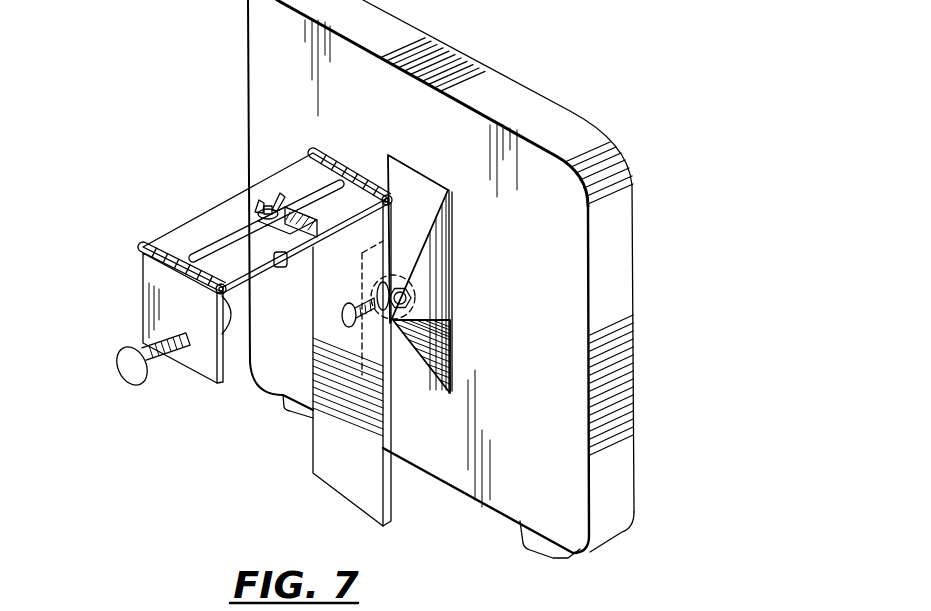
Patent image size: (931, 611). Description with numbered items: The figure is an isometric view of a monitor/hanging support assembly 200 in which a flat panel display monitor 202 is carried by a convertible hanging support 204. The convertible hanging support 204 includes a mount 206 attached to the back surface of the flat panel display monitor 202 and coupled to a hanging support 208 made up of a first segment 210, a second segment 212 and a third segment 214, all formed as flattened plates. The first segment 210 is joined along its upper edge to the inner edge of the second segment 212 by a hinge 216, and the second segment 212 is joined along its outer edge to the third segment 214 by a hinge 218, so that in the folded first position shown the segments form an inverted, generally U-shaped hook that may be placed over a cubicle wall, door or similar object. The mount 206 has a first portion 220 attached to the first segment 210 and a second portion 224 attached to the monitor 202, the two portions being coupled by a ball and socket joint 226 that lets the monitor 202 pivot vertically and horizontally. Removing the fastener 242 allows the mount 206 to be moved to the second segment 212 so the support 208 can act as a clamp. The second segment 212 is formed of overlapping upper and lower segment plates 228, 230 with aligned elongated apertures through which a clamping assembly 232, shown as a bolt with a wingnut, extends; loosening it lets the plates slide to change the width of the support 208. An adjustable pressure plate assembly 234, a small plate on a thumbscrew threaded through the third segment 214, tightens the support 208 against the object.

The monitor/hanging support assembly 200 is at (512, 37).
The flat panel display monitor 202 is at (612, 255).
The convertible hanging support 204 is at (241, 180).
The mount 206 is at (425, 362).
The hanging support 208 is at (337, 477).
The first segment 210 is at (388, 487).
The second segment 212 is at (190, 227).
The third segment 214 is at (167, 316).
The hinge 216 is at (344, 172).
The hinge 218 is at (155, 258).
The first portion 220 is at (435, 352).
The second portion 224 is at (403, 303).
The ball and socket joint 226 is at (418, 287).
The upper segment plate 228 is at (300, 176).
The lower segment plate 230 is at (360, 221).
The clamping assembly 232 is at (252, 206).
The adjustable pressure plate assembly 234 is at (122, 370).
The fastener 242 is at (340, 316).